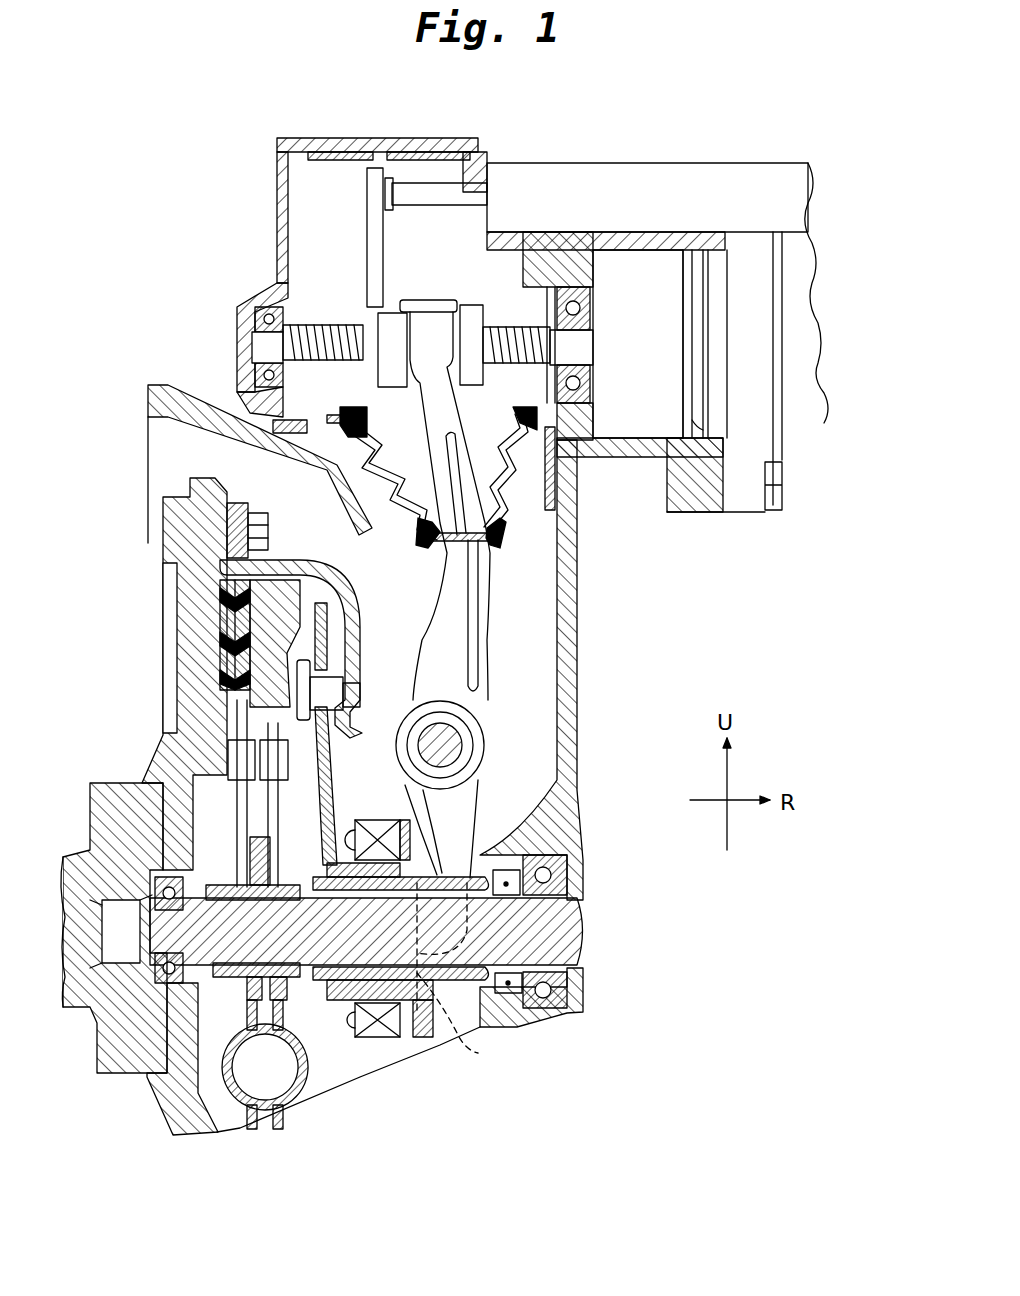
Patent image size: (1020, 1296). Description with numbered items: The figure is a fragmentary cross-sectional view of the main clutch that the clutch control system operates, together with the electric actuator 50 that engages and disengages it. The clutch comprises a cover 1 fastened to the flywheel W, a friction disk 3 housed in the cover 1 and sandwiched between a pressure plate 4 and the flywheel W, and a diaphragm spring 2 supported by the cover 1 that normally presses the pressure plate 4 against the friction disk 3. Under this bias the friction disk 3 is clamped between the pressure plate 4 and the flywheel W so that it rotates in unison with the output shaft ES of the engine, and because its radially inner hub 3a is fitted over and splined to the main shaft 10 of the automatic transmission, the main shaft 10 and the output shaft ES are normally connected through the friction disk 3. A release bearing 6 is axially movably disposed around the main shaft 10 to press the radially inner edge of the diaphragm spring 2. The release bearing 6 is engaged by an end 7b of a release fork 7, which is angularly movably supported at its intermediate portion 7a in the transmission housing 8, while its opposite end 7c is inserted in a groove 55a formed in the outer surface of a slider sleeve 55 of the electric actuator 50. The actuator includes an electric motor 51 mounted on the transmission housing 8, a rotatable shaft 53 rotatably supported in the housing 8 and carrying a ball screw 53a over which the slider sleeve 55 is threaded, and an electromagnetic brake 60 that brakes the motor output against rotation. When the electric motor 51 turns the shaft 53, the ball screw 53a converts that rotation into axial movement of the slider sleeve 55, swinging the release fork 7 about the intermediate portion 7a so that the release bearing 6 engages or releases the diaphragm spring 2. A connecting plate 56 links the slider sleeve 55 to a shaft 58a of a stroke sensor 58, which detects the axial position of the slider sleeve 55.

The cover 1 is at (298, 548).
The diaphragm spring 2 is at (333, 797).
The friction disk 3 is at (230, 660).
The radially inner hub 3a is at (215, 882).
The pressure plate 4 is at (268, 793).
The release bearing 6 is at (380, 1040).
The release fork 7 is at (490, 655).
The intermediate portion 7a is at (462, 745).
The end 7b is at (465, 977).
The opposite end 7c is at (427, 326).
The transmission housing 8 is at (568, 678).
The main shaft 10 is at (560, 932).
The electric actuator 50 is at (646, 545).
The electric motor 51 is at (807, 437).
The rotatable shaft 53 is at (327, 370).
The ball screw 53a is at (337, 324).
The slider sleeve 55 is at (465, 327).
The groove 55a is at (392, 410).
The connecting plate 56 is at (373, 236).
The stroke sensor 58 is at (648, 178).
The shaft 58a is at (413, 192).
The electromagnetic brake 60 is at (660, 344).
The flywheel W is at (172, 548).
The output shaft ES is at (78, 860).